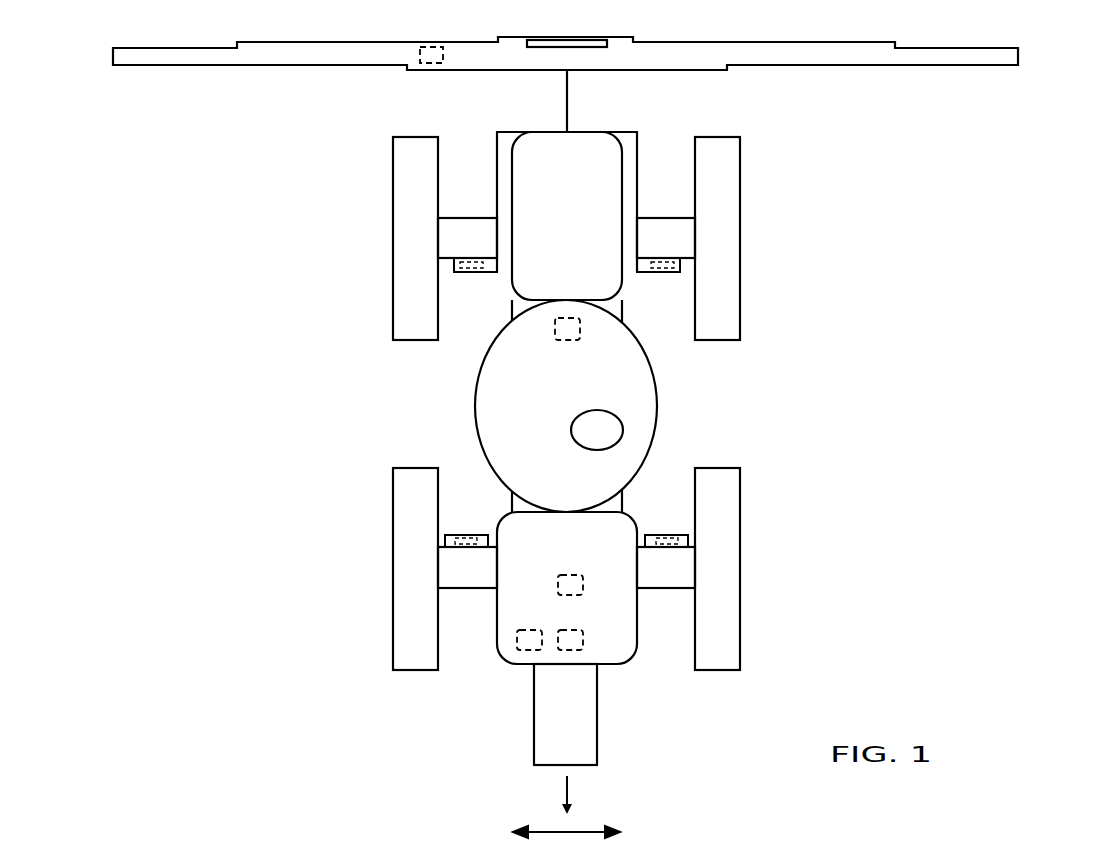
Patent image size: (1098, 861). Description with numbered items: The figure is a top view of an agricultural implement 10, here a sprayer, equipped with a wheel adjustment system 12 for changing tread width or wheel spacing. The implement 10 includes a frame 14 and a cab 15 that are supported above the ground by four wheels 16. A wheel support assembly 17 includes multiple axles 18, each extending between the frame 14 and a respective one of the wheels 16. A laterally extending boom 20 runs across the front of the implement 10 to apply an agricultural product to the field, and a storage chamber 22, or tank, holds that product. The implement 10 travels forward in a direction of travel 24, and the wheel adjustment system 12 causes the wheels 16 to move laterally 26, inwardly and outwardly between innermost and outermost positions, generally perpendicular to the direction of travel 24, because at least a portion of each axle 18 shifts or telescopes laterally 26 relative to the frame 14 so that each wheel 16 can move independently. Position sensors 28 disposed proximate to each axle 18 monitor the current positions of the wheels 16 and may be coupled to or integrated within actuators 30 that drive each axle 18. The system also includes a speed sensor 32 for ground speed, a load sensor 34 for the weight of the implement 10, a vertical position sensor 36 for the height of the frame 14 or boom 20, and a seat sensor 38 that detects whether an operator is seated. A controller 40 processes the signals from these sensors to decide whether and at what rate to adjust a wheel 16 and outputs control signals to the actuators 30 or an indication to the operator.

The agricultural implement 10 is at (996, 146).
The wheel adjustment system 12 is at (862, 183).
The frame 14 is at (622, 502).
The cab 15 is at (617, 537).
The wheels 16 is at (405, 232).
The wheel support assembly 17 is at (669, 138).
The axles 18 is at (460, 217).
The boom 20 is at (690, 52).
The storage chamber 22 is at (637, 410).
The direction of travel 24 is at (570, 785).
The lateral direction 26 is at (545, 830).
The position sensors 28 is at (455, 268).
The actuators 30 is at (475, 273).
The speed sensor 32 is at (528, 630).
The load sensor 34 is at (560, 338).
The vertical position sensor 36 is at (430, 44).
The seat sensor 38 is at (570, 575).
The controller 40 is at (575, 630).